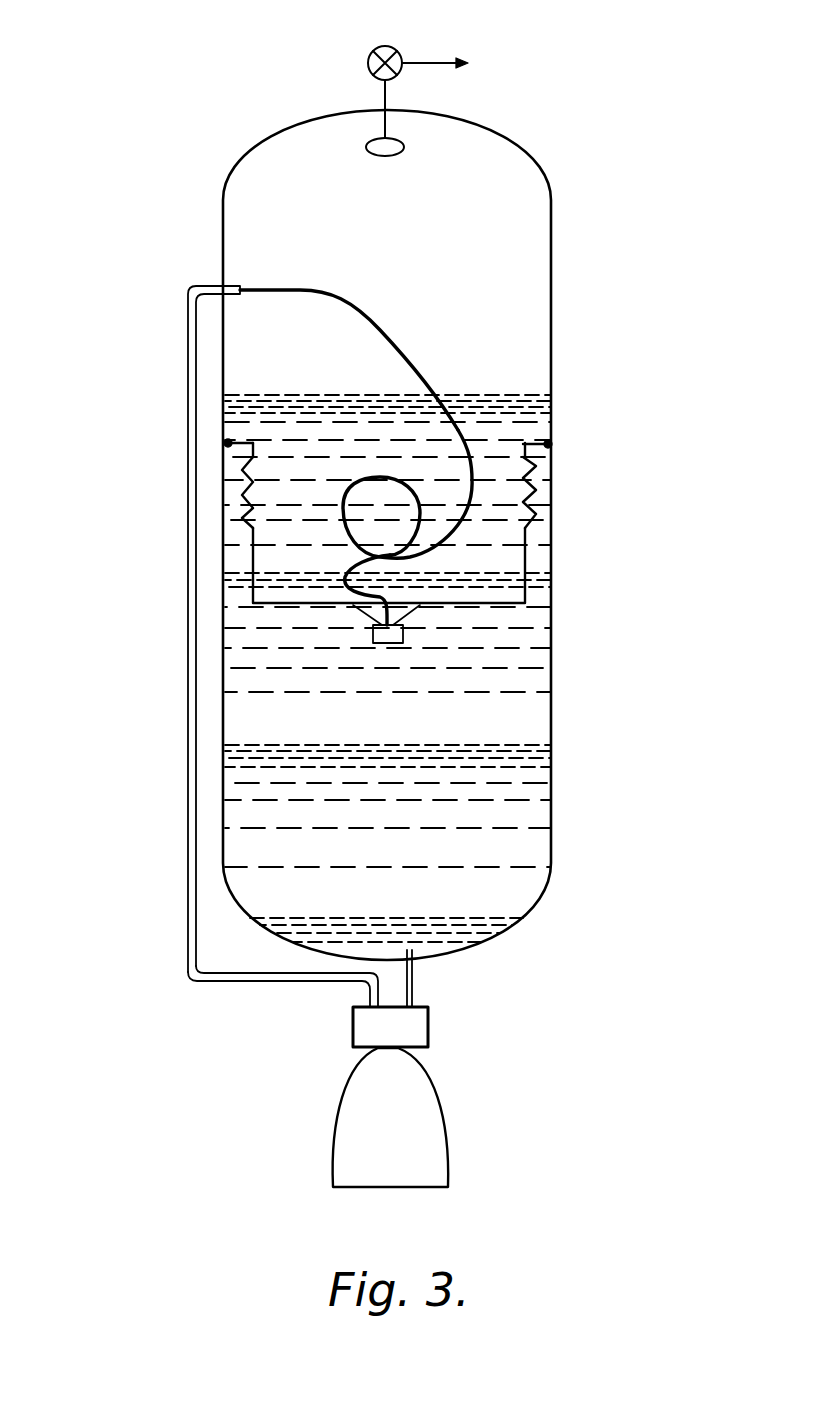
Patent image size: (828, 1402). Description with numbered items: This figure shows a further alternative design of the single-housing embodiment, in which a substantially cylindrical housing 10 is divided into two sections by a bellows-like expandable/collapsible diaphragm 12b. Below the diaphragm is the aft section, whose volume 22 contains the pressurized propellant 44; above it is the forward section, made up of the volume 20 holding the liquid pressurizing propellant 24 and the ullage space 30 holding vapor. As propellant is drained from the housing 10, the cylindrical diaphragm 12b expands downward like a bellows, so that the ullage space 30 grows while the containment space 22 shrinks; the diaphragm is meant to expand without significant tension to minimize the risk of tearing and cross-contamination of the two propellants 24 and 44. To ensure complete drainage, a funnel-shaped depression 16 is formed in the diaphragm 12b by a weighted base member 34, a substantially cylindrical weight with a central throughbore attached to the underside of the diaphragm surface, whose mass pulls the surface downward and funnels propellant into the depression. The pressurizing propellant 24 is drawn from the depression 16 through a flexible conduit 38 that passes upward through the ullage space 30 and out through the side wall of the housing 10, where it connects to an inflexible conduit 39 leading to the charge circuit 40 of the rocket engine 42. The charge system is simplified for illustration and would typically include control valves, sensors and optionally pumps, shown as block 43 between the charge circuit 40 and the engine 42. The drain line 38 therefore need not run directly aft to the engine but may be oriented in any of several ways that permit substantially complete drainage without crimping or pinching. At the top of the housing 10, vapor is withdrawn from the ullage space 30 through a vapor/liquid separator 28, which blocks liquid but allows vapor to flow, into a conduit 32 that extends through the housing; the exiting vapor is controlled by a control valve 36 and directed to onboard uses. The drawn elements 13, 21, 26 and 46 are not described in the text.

The housing 10 is at (548, 184).
The bellows-like expandable/collapsible diaphragm 12b is at (528, 547).
The springs 13 is at (538, 510).
The funnel-shaped depression 16 is at (405, 598).
The volume containing pressurizing propellant 20 is at (510, 423).
The anchor points 21 is at (228, 443).
The pressurized propellant containment space 22 is at (513, 750).
The pressurizing propellant 24 is at (453, 479).
The liquid surface 26 is at (487, 397).
The vapor/liquid separator 28 is at (405, 148).
The ullage space 30 is at (408, 288).
The conduit 32 is at (383, 100).
The weighted base member 34 is at (403, 633).
The control valve 36 is at (373, 52).
The flexible conduit 38 is at (273, 288).
The inflexible conduit 39 is at (188, 897).
The charge circuit 40 is at (370, 994).
The rocket engine 42 is at (404, 1138).
The block of control valves, sensors, and optionally pumps 43 is at (428, 1028).
The pressurized propellant 44 is at (436, 738).
The outlet pipe 46 is at (413, 980).